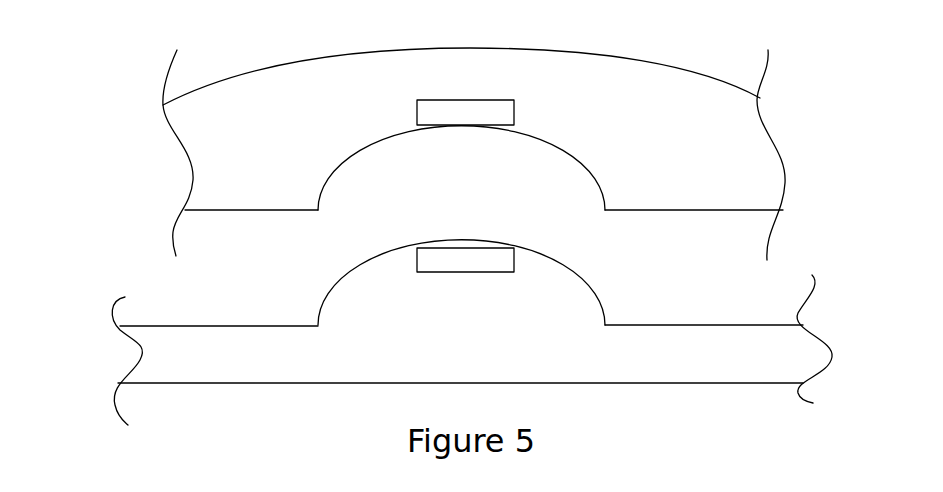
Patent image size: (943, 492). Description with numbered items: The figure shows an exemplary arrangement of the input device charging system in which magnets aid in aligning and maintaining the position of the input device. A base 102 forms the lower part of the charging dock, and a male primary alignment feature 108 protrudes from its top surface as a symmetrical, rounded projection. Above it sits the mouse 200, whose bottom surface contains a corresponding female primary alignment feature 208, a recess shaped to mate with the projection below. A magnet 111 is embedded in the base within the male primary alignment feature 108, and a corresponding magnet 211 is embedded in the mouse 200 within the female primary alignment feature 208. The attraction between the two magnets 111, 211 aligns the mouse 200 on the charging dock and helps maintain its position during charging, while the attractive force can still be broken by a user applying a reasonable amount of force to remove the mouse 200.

The base 102 is at (193, 361).
The male primary alignment feature 108 is at (336, 279).
The magnet 111 is at (465, 273).
The mouse 200 is at (605, 93).
The female primary alignment feature 208 is at (353, 155).
The magnet 211 is at (438, 100).